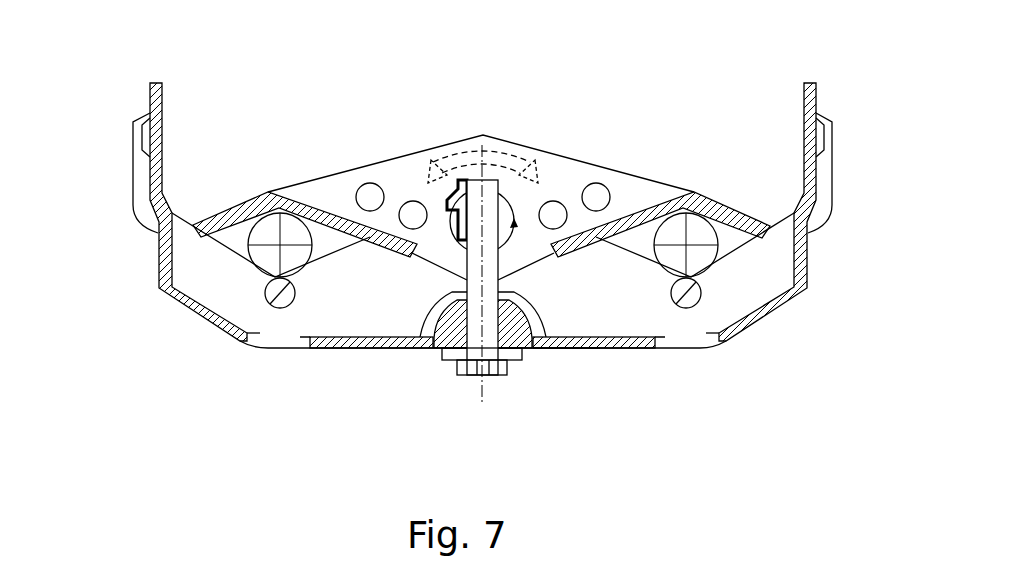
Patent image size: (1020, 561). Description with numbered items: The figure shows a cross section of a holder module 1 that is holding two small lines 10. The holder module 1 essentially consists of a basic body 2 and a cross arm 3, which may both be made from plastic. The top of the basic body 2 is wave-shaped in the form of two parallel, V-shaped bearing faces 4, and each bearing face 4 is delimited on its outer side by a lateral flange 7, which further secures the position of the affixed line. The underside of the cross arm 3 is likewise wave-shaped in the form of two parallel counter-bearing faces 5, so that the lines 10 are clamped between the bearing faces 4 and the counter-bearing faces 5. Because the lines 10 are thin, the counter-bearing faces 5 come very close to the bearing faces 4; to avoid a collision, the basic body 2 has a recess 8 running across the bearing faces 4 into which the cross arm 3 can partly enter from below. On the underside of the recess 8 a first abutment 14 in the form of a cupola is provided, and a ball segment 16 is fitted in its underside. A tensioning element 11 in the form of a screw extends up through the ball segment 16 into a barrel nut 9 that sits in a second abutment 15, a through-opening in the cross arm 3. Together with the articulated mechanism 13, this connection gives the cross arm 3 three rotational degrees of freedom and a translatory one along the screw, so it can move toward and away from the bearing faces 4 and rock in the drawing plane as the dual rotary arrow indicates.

The holder module 1 is at (328, 112).
The basic body 2 is at (246, 361).
The cross arm 3 is at (482, 106).
The bearing face 4 is at (239, 257).
The counter-bearing face 5 is at (660, 197).
The lateral flange 7 is at (155, 160).
The recess 8 is at (360, 316).
The barrel nut 9 is at (457, 210).
The line 10 is at (268, 213).
The tensioning element 11 is at (511, 380).
The articulated mechanism 13 is at (440, 340).
The first abutment 14 is at (539, 306).
The second abutment 15 is at (521, 182).
The ball segment 16 is at (553, 346).